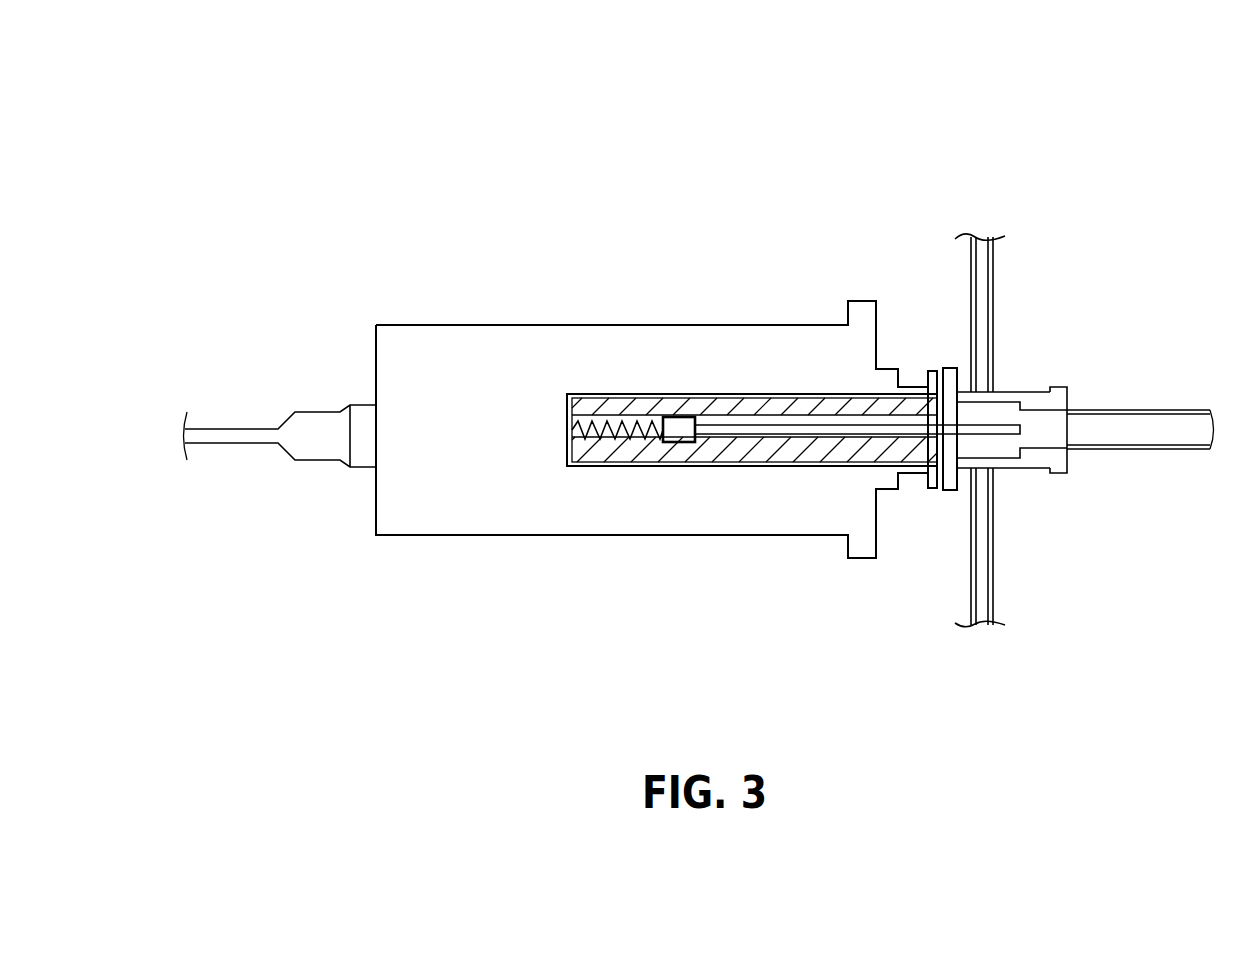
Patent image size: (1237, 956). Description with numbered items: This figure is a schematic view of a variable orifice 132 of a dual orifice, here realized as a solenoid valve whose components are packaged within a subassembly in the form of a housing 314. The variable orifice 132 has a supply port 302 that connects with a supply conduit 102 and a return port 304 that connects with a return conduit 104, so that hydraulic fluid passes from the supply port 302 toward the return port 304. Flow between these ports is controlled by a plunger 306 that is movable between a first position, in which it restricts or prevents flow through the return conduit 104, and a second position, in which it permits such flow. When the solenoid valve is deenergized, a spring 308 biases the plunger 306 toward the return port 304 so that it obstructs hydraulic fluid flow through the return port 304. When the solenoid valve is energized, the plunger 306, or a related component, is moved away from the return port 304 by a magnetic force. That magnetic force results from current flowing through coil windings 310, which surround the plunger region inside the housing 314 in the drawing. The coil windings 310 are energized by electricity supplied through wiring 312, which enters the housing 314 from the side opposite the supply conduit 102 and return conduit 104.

The variable orifice 132 is at (813, 130).
The housing 314 is at (457, 325).
The coil windings 310 is at (740, 413).
The spring 308 is at (625, 437).
The plunger 306 is at (810, 434).
The wiring 312 is at (237, 440).
The supply conduit 102 is at (988, 272).
The supply port 302 is at (982, 398).
The return port 304 is at (1054, 433).
The return conduit 104 is at (1132, 420).